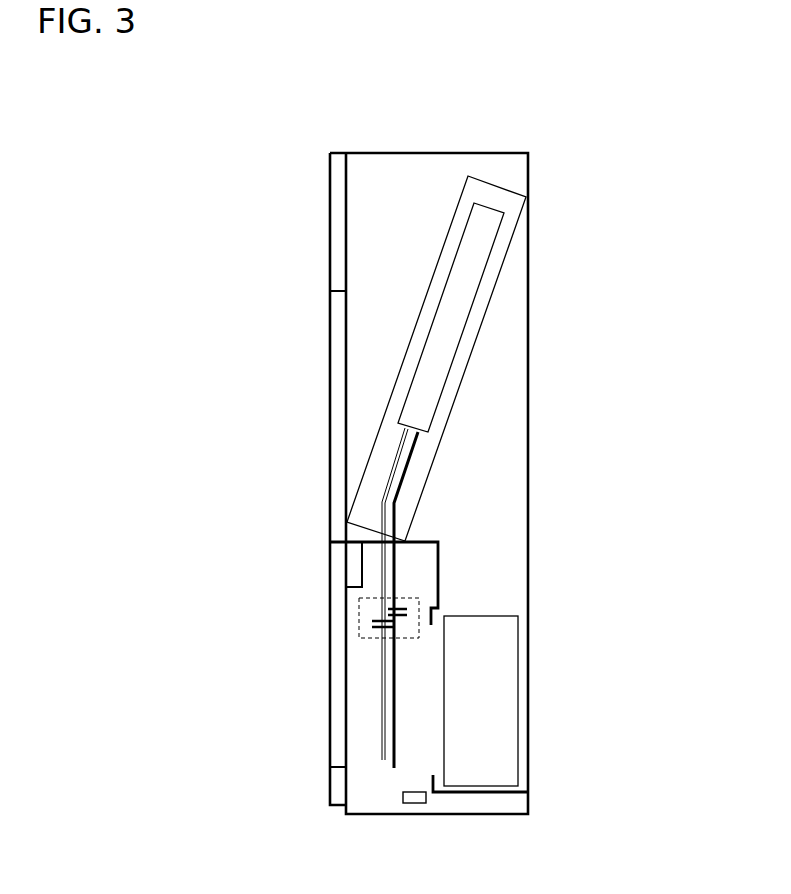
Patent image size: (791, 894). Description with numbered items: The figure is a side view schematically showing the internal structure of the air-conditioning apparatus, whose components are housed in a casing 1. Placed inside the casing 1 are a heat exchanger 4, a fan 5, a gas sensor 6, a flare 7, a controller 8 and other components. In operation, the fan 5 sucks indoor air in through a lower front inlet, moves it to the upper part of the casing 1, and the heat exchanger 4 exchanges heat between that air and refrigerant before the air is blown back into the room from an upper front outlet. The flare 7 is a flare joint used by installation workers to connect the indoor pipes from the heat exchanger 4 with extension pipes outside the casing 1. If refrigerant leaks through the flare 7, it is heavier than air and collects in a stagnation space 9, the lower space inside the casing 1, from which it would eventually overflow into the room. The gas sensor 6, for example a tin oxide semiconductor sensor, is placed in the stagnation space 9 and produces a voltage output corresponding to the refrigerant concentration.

The casing 1 is at (333, 130).
The heat exchanger 4 is at (415, 333).
The fan 5 is at (517, 752).
The gas sensor 6 is at (413, 803).
The flare 7 is at (359, 615).
The controller 8 is at (353, 565).
The stagnation space 9 is at (360, 790).